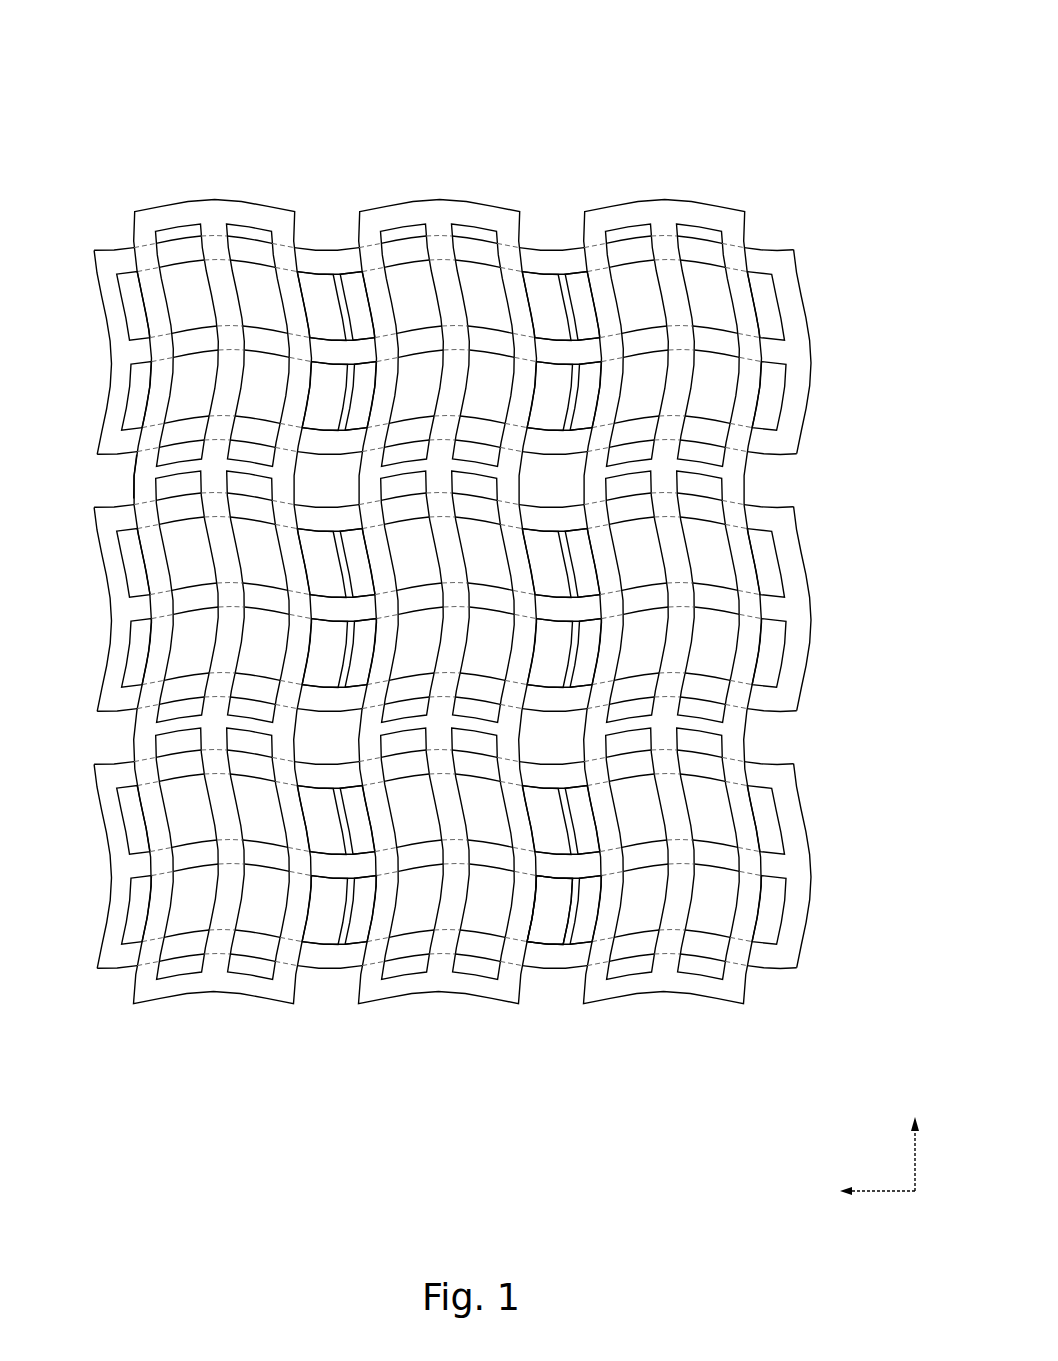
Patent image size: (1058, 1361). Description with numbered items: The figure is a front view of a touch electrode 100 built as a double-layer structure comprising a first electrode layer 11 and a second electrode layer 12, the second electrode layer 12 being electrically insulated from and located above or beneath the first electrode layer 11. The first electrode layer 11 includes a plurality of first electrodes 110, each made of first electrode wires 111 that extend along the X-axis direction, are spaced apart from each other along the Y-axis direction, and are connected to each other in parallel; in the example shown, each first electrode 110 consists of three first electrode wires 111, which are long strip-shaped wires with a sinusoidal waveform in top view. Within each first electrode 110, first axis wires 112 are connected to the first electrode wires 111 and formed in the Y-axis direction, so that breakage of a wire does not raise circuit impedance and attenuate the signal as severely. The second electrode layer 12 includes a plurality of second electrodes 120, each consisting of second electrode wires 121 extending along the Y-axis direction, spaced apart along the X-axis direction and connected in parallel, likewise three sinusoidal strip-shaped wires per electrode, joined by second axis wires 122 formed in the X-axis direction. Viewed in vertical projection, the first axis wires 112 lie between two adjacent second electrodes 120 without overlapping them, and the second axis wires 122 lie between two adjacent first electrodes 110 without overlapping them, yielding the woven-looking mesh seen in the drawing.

The touch electrode 100 is at (72, 25).
The second electrode layer 12 is at (133, 115).
The second electrode 120 is at (668, 194).
The second electrode wire 121 is at (433, 233).
The second axis wire 122 is at (133, 473).
The first electrode layer 11 is at (831, 965).
The first electrode 110 is at (806, 250).
The first electrode wire 111 is at (770, 352).
The first axis wire 112 is at (561, 930).